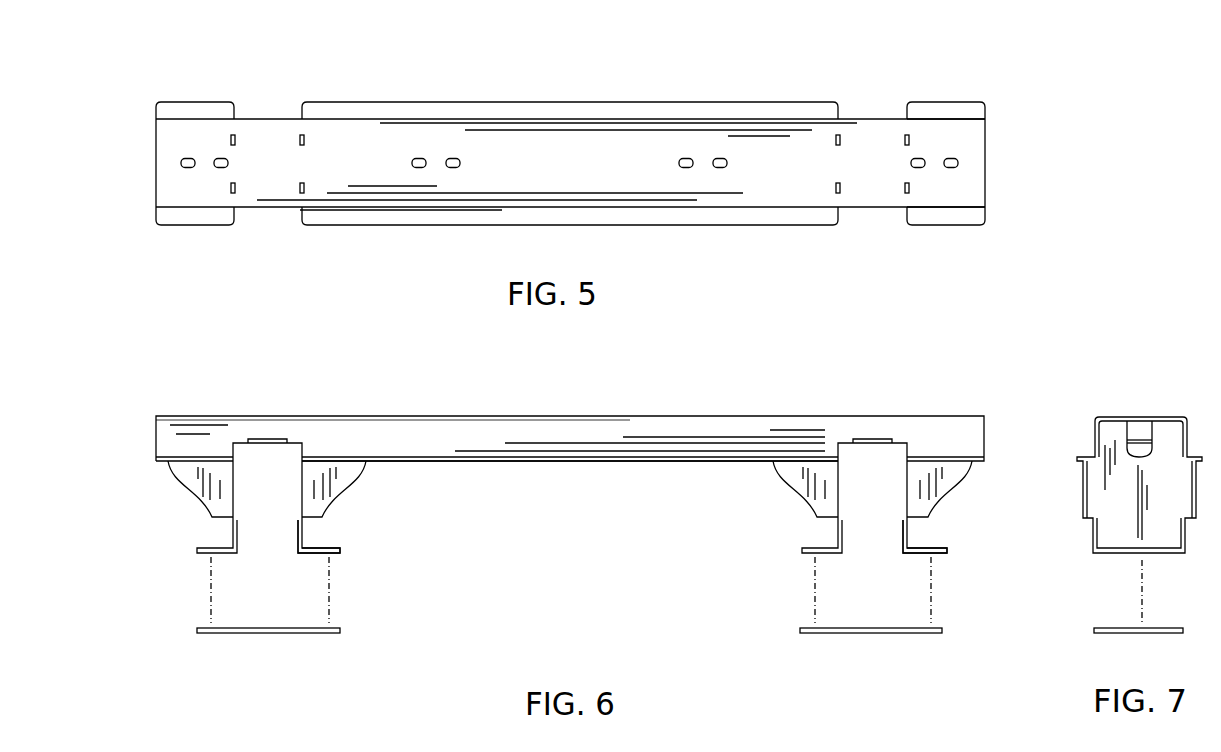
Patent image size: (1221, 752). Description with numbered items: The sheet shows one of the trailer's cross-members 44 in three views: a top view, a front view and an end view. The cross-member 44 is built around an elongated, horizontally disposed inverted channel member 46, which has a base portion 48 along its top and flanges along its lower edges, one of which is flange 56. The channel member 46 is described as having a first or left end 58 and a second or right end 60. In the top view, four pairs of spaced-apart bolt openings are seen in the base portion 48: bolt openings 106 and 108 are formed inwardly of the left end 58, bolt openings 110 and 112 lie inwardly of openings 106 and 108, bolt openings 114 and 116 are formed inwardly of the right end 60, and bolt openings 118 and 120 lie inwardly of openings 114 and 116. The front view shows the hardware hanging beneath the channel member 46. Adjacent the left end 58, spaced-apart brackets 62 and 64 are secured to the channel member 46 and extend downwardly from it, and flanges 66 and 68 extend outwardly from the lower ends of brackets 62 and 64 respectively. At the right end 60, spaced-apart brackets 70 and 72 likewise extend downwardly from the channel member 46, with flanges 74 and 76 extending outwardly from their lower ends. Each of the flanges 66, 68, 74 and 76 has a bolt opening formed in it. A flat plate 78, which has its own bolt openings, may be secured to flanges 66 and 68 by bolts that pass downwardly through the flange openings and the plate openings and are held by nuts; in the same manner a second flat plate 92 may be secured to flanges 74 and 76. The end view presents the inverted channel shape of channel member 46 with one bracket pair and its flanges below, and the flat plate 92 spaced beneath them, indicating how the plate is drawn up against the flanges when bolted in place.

In FIG. 5, the cross-member 44 is at (558, 88).
In FIG. 5, the inverted channel member 46 is at (972, 192).
In FIG. 6, the inverted channel member 46 is at (962, 440).
In FIG. 7, the inverted channel member 46 is at (1141, 413).
In FIG. 5, the base portion 48 is at (552, 171).
In FIG. 6, the flange 56 is at (622, 461).
In FIG. 5, the first or left end 58 is at (155, 162).
In FIG. 5, the second or right end 60 is at (988, 158).
In FIG. 6, the bracket 62 is at (191, 500).
In FIG. 6, the bracket 64 is at (333, 486).
In FIG. 6, the flange 66 is at (193, 549).
In FIG. 6, the flange 68 is at (340, 549).
In FIG. 6, the bracket 70 is at (943, 487).
In FIG. 6, the bracket 72 is at (795, 500).
In FIG. 6, the flange 74 is at (947, 549).
In FIG. 6, the flange 76 is at (805, 549).
In FIG. 6, the flat plate 78 is at (284, 640).
In FIG. 6, the flat plate 92 is at (912, 638).
In FIG. 7, the flat plate 92 is at (1130, 637).
In FIG. 5, the bolt opening 106 is at (188, 157).
In FIG. 5, the bolt opening 108 is at (221, 157).
In FIG. 5, the bolt opening 110 is at (419, 157).
In FIG. 5, the bolt opening 112 is at (453, 157).
In FIG. 5, the bolt opening 114 is at (951, 157).
In FIG. 5, the bolt opening 116 is at (918, 157).
In FIG. 5, the bolt opening 118 is at (720, 157).
In FIG. 5, the bolt opening 120 is at (686, 157).